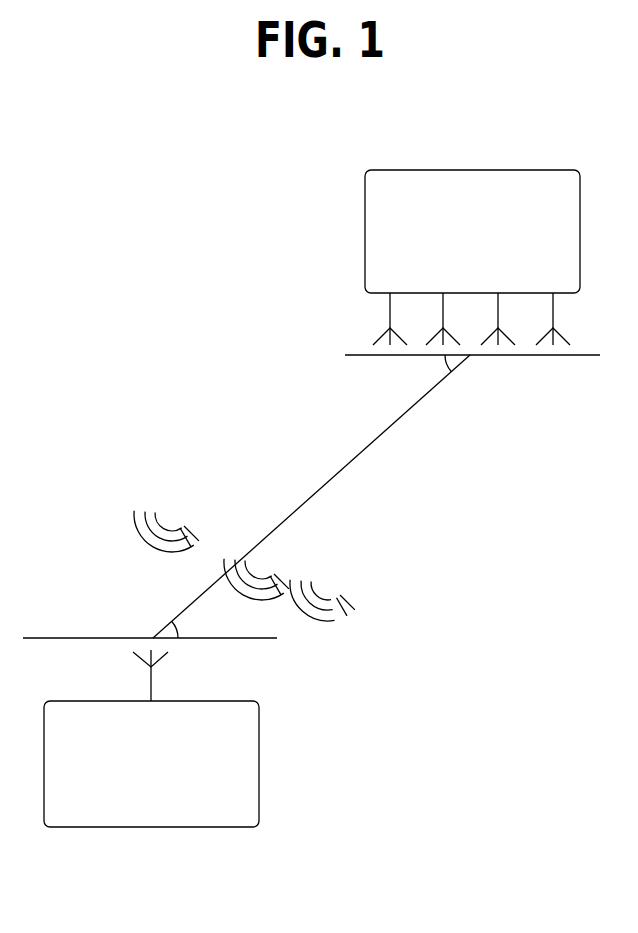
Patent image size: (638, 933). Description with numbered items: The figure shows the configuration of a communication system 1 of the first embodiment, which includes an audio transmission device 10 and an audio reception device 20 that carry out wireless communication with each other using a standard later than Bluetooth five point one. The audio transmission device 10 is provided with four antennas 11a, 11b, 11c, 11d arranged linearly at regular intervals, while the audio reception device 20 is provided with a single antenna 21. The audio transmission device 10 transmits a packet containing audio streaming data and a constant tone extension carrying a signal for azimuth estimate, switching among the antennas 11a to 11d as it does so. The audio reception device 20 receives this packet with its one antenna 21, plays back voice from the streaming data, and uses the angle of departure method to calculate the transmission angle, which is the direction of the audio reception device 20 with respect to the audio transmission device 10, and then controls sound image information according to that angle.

The communication system 1 is at (113, 333).
The audio transmission device 10 is at (469, 168).
The antenna 11a is at (556, 336).
The antenna 11b is at (501, 336).
The antenna 11c is at (446, 336).
The antenna 11d is at (393, 336).
The audio reception device 20 is at (92, 700).
The antenna 21 is at (152, 681).